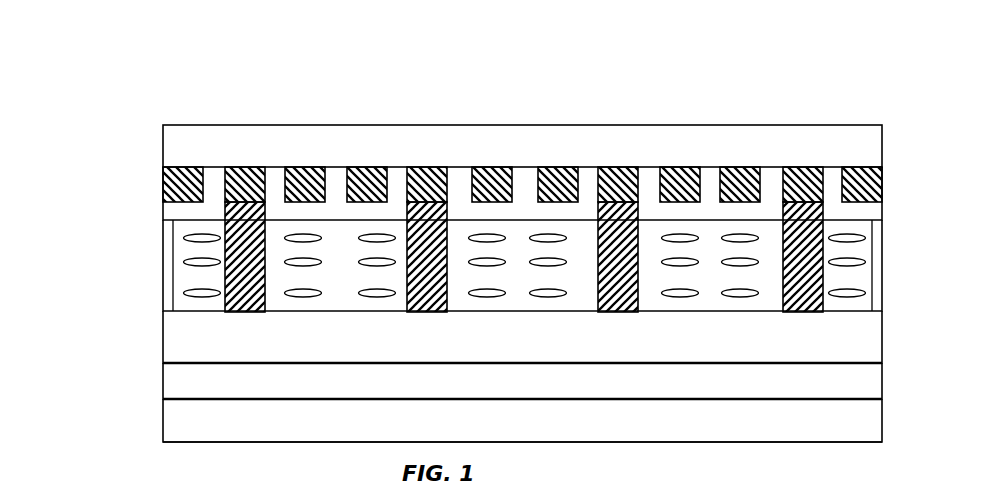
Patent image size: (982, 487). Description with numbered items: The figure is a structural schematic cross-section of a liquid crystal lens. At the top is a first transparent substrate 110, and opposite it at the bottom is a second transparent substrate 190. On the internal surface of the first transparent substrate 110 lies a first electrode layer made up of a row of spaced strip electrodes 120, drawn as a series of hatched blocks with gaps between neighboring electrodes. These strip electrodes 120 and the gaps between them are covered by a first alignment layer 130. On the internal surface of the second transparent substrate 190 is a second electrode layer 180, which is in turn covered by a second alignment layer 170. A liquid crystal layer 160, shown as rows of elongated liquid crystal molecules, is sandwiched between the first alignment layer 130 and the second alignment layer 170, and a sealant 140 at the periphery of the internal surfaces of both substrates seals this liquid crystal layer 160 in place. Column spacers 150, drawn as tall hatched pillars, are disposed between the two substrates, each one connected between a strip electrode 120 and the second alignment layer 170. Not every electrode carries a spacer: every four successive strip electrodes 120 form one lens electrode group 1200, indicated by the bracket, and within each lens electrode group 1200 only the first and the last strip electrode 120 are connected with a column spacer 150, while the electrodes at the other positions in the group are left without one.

The first transparent substrate 110 is at (175, 148).
The strip electrode 120 is at (175, 187).
The first alignment layer 130 is at (175, 215).
The sealant 140 is at (175, 250).
The column spacer 150 is at (248, 205).
The liquid crystal layer 160 is at (186, 293).
The second alignment layer 170 is at (173, 340).
The second electrode layer 180 is at (168, 380).
The second transparent substrate 190 is at (175, 421).
The lens electrode group 1200 is at (618, 167).